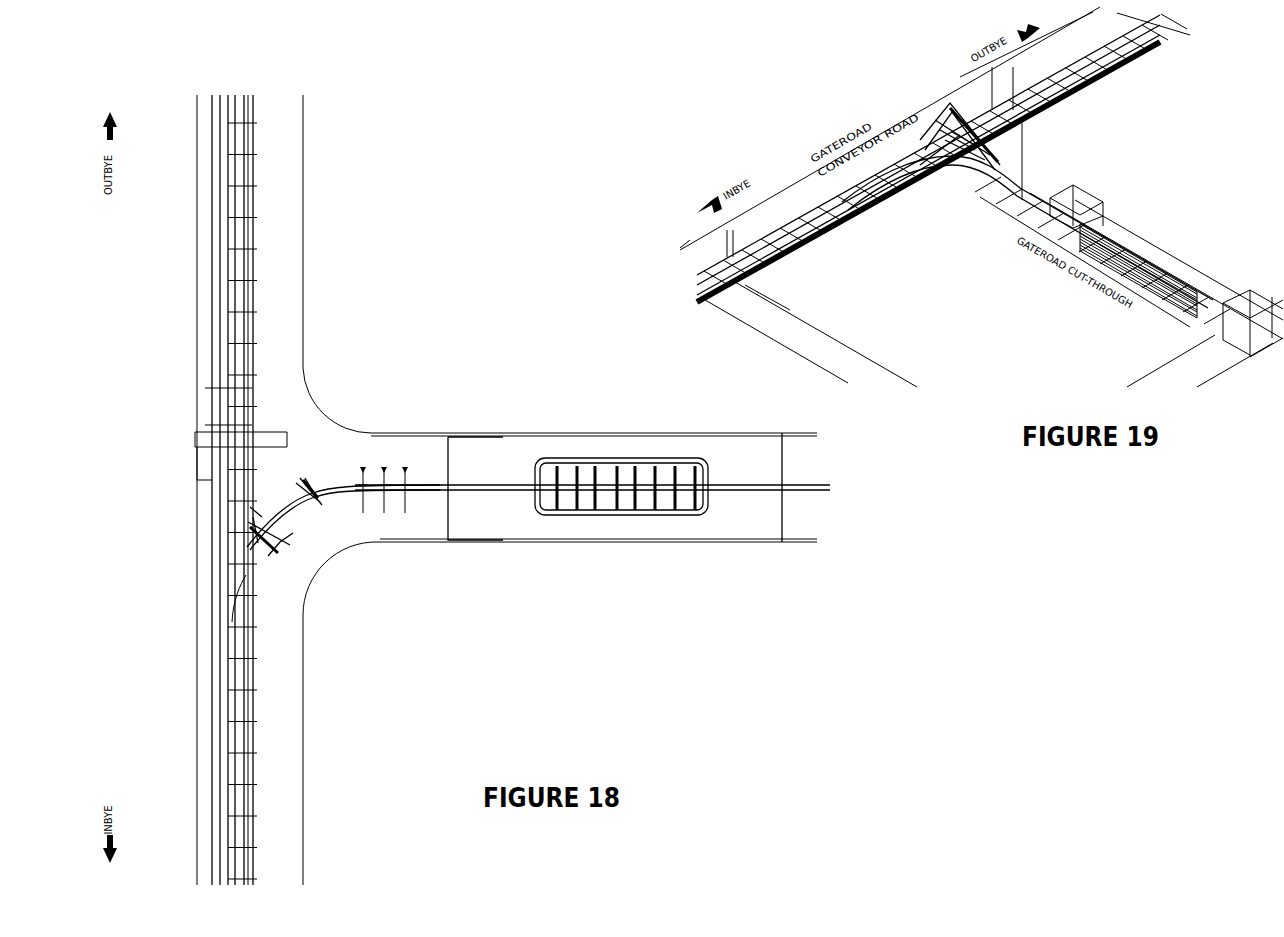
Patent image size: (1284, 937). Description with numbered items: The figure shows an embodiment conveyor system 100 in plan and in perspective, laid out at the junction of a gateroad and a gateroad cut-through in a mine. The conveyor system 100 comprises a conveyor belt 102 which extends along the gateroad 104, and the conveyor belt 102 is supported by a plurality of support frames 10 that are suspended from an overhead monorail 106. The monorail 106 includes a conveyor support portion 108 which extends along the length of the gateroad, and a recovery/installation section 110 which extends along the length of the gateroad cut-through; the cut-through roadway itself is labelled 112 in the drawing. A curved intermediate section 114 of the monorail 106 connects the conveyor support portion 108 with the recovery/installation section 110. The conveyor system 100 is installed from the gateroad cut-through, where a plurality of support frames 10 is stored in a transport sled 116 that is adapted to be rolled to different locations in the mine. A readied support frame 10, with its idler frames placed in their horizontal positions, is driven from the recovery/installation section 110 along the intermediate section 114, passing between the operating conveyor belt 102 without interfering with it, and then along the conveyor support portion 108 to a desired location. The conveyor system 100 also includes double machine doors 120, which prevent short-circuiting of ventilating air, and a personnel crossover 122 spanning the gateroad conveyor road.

In FIG. 18, the support frame 10 is at (250, 727).
In FIG. 19, the support frame 10 is at (800, 255).
In FIG. 18, the conveyor system 100 is at (490, 340).
In FIG. 19, the conveyor system 100 is at (760, 112).
In FIG. 18, the conveyor belt 102 is at (247, 170).
In FIG. 19, the conveyor belt 102 is at (1060, 100).
In FIG. 18, the gateroad 104 is at (280, 228).
In FIG. 18, the overhead monorail 106 is at (233, 133).
In FIG. 19, the overhead monorail 106 is at (1092, 83).
In FIG. 18, the conveyor support portion 108 is at (232, 670).
In FIG. 19, the conveyor support portion 108 is at (787, 222).
In FIG. 18, the recovery/installation section 110 is at (470, 502).
In FIG. 18, the cut-through roadway 112 is at (723, 527).
In FIG. 18, the curved intermediate section 114 is at (312, 492).
In FIG. 19, the curved intermediate section 114 is at (955, 192).
In FIG. 18, the transport sled 116 is at (602, 457).
In FIG. 19, the transport sled 116 is at (1168, 257).
In FIG. 18, the double machine doors 120 is at (450, 450).
In FIG. 19, the double machine doors 120 is at (1062, 188).
In FIG. 18, the personnel crossover 122 is at (185, 440).